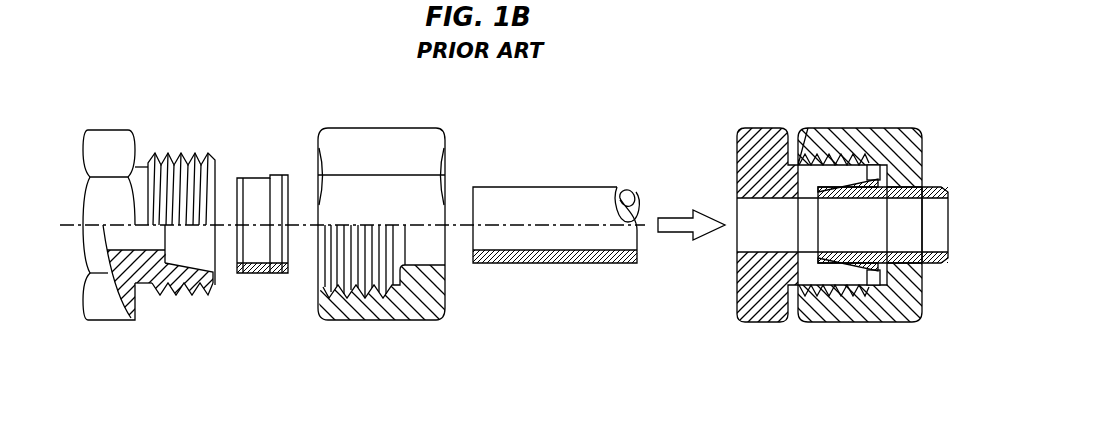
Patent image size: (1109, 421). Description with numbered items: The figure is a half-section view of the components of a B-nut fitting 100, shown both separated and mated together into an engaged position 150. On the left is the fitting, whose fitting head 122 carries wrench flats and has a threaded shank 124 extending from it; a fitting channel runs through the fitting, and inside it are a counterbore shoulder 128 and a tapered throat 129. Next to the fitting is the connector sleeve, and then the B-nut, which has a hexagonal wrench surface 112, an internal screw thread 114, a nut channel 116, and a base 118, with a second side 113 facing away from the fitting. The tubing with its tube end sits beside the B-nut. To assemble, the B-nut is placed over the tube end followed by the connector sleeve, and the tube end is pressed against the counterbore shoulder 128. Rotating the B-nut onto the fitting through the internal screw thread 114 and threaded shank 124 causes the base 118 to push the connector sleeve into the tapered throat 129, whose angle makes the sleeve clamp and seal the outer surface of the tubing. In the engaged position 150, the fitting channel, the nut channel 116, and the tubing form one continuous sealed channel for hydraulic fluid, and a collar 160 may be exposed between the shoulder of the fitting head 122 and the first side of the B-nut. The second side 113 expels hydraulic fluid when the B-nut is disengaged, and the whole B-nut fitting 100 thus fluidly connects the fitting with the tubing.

The B-nut fitting 100 is at (802, 202).
The wrench surface 112 is at (380, 128).
The second side 113 is at (446, 170).
The internal screw thread 114 is at (357, 228).
The nut channel 116 is at (449, 266).
The base 118 is at (400, 225).
The fitting head 122 is at (101, 140).
The threaded shank 124 is at (200, 152).
The counterbore shoulder 128 is at (175, 255).
The tapered throat 129 is at (203, 262).
The engaged position 150 is at (802, 223).
The collar 160 is at (798, 283).